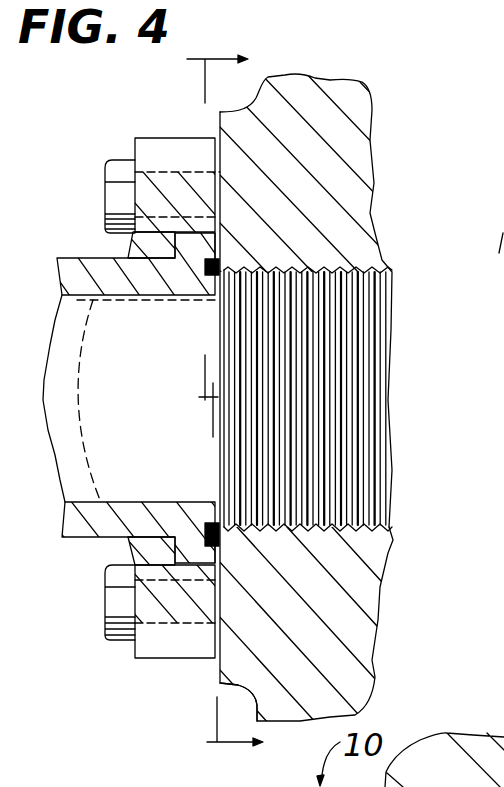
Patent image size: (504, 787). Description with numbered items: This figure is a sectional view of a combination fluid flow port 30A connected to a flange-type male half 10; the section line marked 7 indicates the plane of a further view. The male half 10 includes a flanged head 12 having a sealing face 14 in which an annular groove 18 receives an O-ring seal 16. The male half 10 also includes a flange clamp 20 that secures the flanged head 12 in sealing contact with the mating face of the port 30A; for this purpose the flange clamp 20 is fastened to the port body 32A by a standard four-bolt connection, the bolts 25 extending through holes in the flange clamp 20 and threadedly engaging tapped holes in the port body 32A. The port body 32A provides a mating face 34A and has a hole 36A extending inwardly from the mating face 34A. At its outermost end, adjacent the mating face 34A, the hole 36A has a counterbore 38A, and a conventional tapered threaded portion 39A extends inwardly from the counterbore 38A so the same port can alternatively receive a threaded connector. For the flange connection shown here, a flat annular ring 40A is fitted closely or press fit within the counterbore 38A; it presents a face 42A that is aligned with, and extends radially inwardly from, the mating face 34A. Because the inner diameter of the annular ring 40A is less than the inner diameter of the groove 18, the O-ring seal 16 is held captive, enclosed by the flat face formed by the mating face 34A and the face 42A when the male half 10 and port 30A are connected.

The male half 10 is at (127, 118).
The flanged head 12 is at (72, 258).
The sealing face 14 is at (306, 416).
The O-ring seal 16 is at (210, 274).
The annular groove 18 is at (213, 276).
The flange clamp 20 is at (147, 662).
The bolts 25 is at (106, 160).
The port 30A is at (395, 162).
The port body 32A is at (347, 227).
The mating face 34A is at (220, 673).
The hole 36A is at (352, 350).
The counterbore 38A is at (257, 631).
The tapered threaded portion 39A is at (365, 525).
The annular ring 40A is at (216, 522).
The face 42A is at (213, 437).
The section line 7 is at (238, 401).